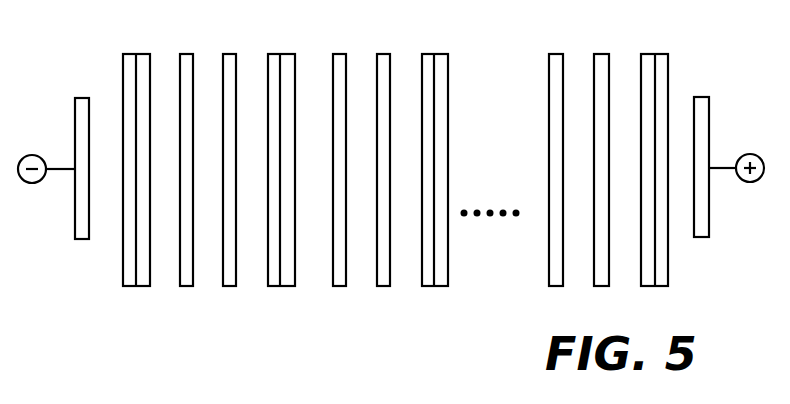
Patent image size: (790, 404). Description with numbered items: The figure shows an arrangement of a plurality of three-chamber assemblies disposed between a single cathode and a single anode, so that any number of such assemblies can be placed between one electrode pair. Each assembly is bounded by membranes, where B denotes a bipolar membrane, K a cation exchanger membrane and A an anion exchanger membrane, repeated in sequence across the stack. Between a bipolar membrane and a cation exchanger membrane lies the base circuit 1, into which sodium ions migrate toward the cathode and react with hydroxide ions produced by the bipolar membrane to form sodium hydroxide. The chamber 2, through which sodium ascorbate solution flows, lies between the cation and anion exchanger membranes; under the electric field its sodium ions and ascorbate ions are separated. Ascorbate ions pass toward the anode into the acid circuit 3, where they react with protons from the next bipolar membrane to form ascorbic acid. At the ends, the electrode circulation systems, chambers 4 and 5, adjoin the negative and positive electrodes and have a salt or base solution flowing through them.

The base circuit 1 is at (395, 156).
The chamber 2 is at (379, 156).
The acid circuit 3 is at (424, 156).
The electrode circulation system chamber 4 is at (63, 168).
The electrode circulation system chamber 5 is at (720, 167).